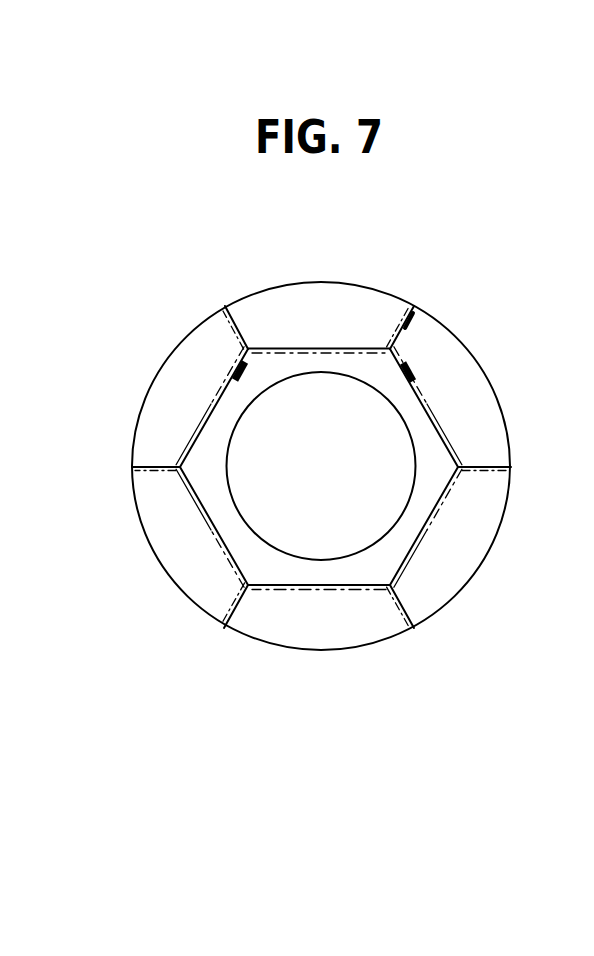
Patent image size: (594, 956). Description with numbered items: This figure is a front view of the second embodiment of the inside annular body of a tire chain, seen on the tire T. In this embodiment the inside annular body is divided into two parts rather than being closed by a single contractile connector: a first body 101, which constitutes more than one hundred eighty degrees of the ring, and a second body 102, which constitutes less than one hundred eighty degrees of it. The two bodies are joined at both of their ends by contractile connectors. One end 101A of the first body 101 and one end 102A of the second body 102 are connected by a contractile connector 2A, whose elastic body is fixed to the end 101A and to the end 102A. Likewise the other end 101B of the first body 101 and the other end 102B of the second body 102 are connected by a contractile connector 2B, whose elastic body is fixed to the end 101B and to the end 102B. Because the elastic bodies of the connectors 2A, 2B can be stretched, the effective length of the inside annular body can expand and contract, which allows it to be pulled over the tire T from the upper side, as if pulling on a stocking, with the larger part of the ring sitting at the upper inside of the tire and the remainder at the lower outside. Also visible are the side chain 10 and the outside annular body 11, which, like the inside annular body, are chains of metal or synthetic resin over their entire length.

The second body 102 is at (310, 348).
The one end of the second body 102A is at (250, 354).
The other end of the second body 102B is at (404, 352).
The tire T is at (410, 351).
The contractile connector 2A is at (238, 369).
The contractile connector 2B is at (412, 370).
The one end of the first body 101A is at (232, 382).
The other end of the first body 101B is at (413, 383).
The outside annular body 11 is at (433, 523).
The side chain 10 is at (391, 592).
The first body 101 is at (330, 586).